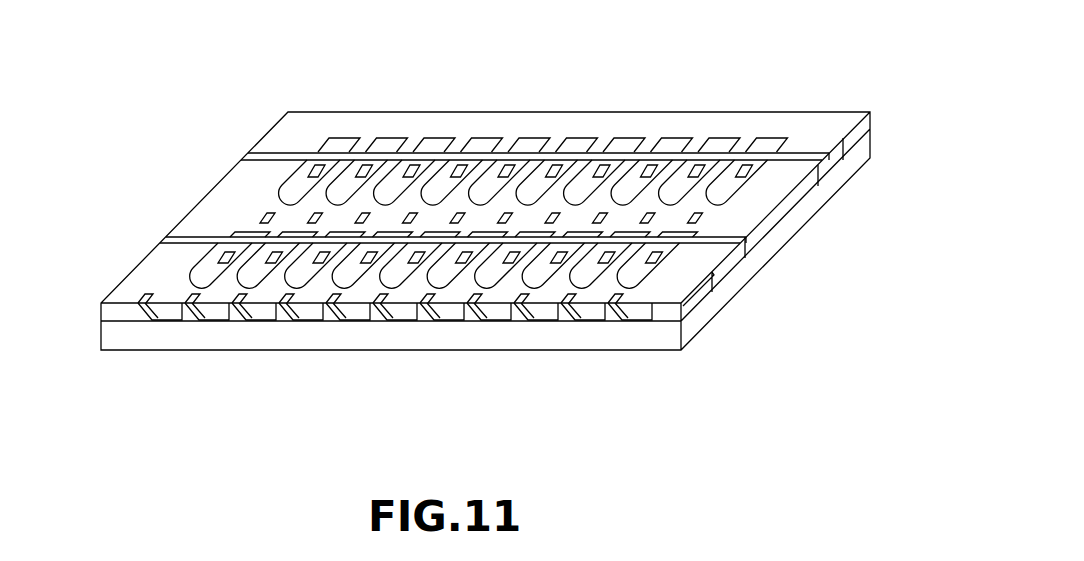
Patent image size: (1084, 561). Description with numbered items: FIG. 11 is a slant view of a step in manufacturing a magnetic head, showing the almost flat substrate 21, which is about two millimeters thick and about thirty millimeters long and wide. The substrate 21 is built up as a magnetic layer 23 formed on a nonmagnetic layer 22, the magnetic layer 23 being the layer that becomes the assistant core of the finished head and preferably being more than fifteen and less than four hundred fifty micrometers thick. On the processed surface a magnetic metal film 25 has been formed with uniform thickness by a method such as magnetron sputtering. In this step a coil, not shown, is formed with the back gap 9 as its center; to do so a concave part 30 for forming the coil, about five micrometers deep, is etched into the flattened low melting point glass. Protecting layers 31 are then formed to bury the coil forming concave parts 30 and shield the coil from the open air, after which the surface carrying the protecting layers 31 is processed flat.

The back gap 9 is at (226, 258).
The substrate 21 is at (840, 194).
The nonmagnetic layer 22 is at (862, 150).
The magnetic layer 23 is at (862, 127).
The magnetic metal film 25 is at (606, 322).
The concave part for forming a coil 30 is at (676, 255).
The protecting layer 31 is at (390, 146).